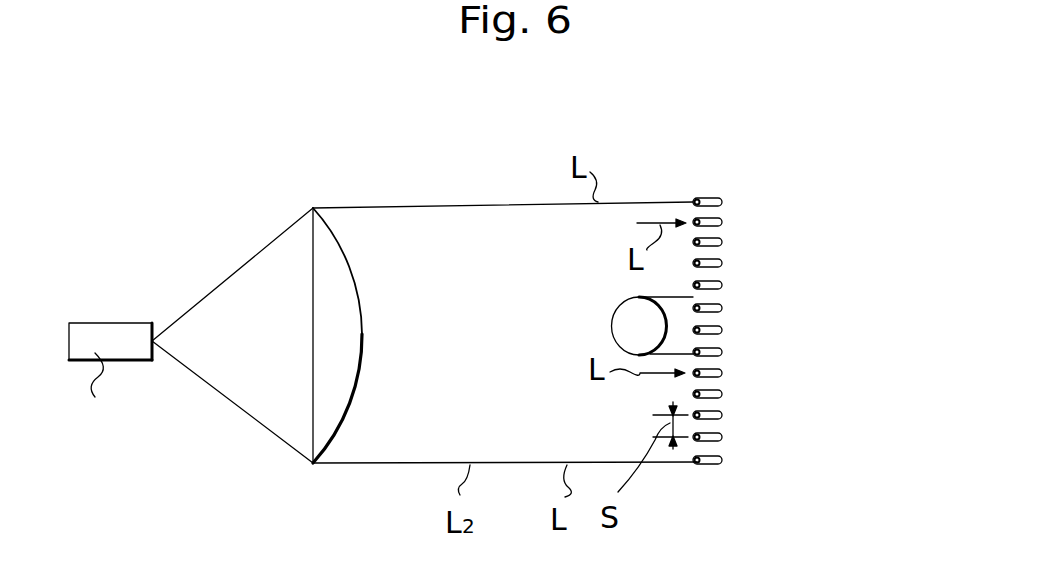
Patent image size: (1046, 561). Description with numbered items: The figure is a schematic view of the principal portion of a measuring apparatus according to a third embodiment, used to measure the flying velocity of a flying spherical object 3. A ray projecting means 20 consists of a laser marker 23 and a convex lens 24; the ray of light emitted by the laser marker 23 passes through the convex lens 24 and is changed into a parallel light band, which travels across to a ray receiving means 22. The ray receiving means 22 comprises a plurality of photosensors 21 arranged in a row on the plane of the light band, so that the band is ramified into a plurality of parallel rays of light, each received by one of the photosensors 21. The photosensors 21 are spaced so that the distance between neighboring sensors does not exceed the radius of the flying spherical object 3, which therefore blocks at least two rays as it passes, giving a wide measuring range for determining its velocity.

The flying spherical object 3 is at (606, 338).
The ray projecting means 20 is at (424, 284).
The photosensor 21 is at (713, 198).
The ray receiving means 22 is at (723, 341).
The laser marker 23 is at (122, 320).
The convex lens 24 is at (351, 317).